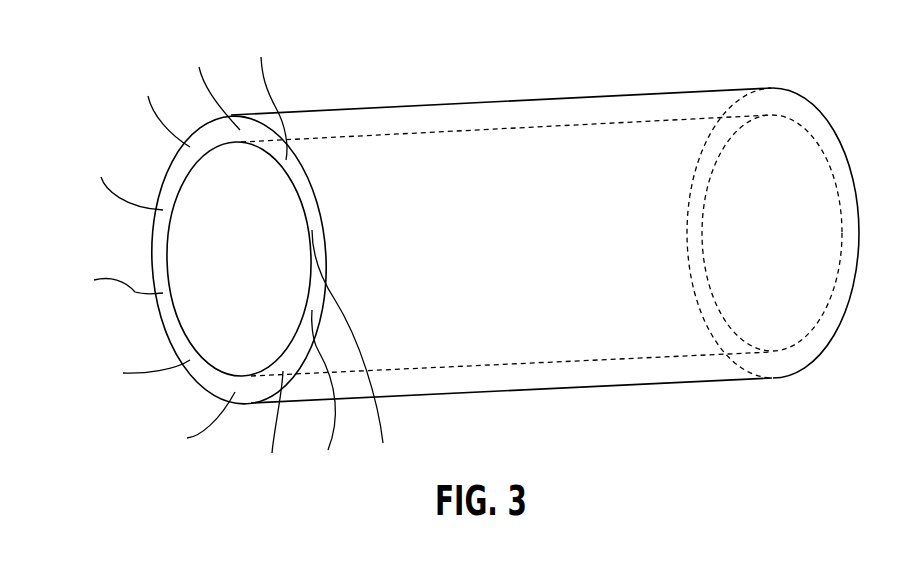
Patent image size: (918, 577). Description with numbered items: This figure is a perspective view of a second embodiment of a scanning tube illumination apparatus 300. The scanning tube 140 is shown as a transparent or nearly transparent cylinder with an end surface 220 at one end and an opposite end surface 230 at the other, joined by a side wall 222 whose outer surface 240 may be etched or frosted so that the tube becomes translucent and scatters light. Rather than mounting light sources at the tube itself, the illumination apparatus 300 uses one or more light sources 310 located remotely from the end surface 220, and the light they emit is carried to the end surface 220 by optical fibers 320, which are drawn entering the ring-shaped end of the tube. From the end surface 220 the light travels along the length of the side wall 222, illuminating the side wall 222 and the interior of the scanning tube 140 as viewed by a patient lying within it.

The scanning tube 140 is at (502, 266).
The end surface 220 is at (254, 390).
The side wall 222 is at (527, 373).
The end surface 230 is at (816, 360).
The outer surface 240 is at (578, 172).
The scanning tube illumination apparatus 300 is at (451, 64).
The light sources 310 is at (261, 57).
The optical fibers 320 is at (166, 129).